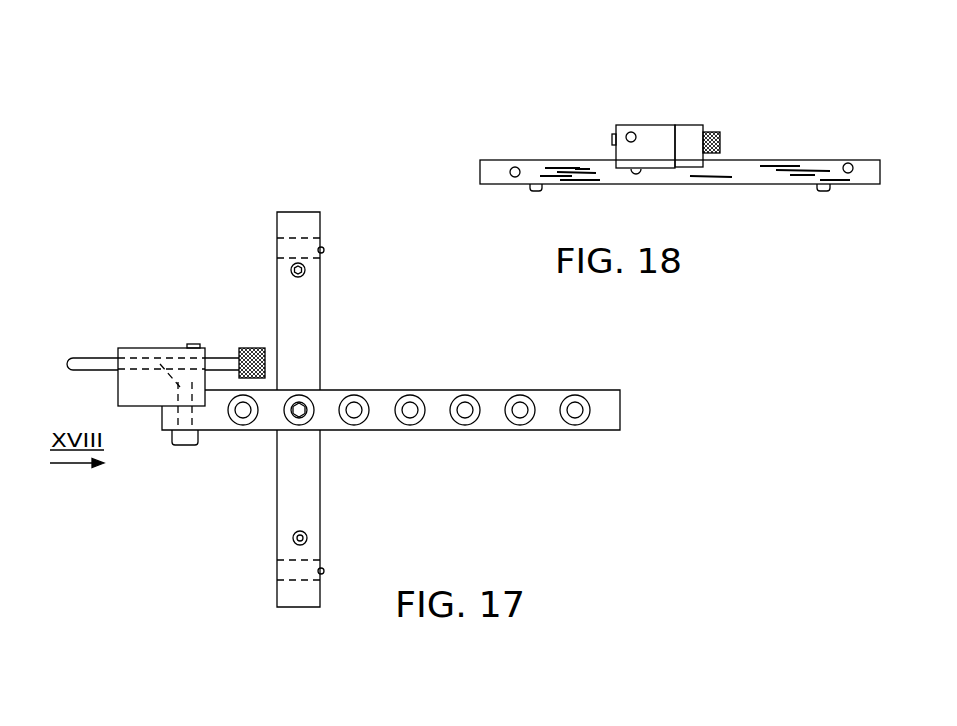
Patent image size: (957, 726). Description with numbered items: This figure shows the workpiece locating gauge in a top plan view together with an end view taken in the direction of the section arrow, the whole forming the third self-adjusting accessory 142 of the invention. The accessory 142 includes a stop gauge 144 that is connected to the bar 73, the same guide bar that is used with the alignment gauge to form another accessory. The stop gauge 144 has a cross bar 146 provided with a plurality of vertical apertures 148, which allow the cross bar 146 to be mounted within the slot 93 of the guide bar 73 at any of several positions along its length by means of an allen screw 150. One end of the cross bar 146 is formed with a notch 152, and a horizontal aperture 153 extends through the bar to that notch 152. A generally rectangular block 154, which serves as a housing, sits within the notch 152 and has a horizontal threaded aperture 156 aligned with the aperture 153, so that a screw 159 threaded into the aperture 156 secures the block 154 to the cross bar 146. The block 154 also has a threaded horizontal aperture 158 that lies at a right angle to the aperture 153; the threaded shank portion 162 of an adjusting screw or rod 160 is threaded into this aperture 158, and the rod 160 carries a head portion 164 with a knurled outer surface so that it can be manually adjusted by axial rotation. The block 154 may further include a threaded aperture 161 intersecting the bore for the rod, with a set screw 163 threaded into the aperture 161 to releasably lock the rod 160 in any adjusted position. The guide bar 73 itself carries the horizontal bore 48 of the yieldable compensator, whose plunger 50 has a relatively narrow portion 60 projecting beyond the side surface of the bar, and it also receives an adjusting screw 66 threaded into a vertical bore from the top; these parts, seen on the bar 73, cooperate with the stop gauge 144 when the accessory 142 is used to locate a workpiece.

In FIG. 18, the horizontal bore 48 is at (512, 166).
In FIG. 17, the plunger 50 is at (344, 249).
In FIG. 17, the relatively narrow portion 60 is at (324, 249).
In FIG. 17, the adjusting screw 66 is at (306, 270).
In FIG. 18, the adjusting screw 66 is at (530, 190).
In FIG. 17, the bar 73 is at (310, 338).
In FIG. 18, the bar 73 is at (866, 160).
In FIG. 18, the slot 93 is at (617, 157).
In FIG. 17, the third self-adjusting accessory 142 is at (409, 362).
In FIG. 18, the third self-adjusting accessory 142 is at (798, 88).
In FIG. 17, the stop gauge 144 is at (160, 327).
In FIG. 18, the stop gauge 144 is at (673, 89).
In FIG. 17, the cross bar 146 is at (543, 424).
In FIG. 18, the cross bar 146 is at (690, 127).
In FIG. 17, the vertical apertures 148 is at (476, 393).
In FIG. 17, the allen screw 150 is at (310, 418).
In FIG. 17, the notch 152 is at (177, 405).
In FIG. 17, the horizontal aperture 153 is at (197, 423).
In FIG. 17, the block 154 is at (125, 388).
In FIG. 18, the block 154 is at (665, 163).
In FIG. 17, the horizontal threaded aperture 156 is at (156, 349).
In FIG. 17, the threaded horizontal aperture 158 is at (174, 358).
In FIG. 17, the screw 159 is at (190, 446).
In FIG. 18, the screw 159 is at (722, 134).
In FIG. 17, the adjusting screw 160 is at (86, 314).
In FIG. 17, the threaded aperture 161 is at (201, 352).
In FIG. 18, the threaded aperture 161 is at (616, 118).
In FIG. 17, the threaded shank portion 162 is at (72, 357).
In FIG. 18, the threaded shank portion 162 is at (633, 133).
In FIG. 17, the set screw 163 is at (196, 350).
In FIG. 18, the set screw 163 is at (613, 138).
In FIG. 17, the head portion 164 is at (245, 348).